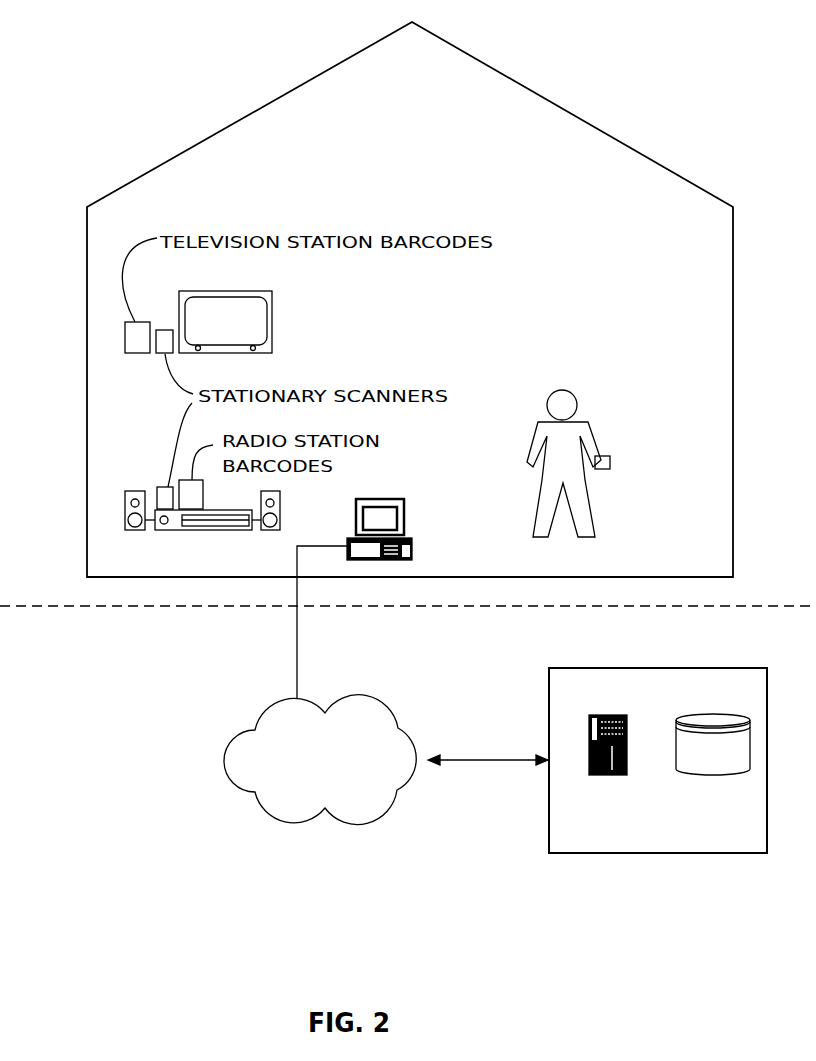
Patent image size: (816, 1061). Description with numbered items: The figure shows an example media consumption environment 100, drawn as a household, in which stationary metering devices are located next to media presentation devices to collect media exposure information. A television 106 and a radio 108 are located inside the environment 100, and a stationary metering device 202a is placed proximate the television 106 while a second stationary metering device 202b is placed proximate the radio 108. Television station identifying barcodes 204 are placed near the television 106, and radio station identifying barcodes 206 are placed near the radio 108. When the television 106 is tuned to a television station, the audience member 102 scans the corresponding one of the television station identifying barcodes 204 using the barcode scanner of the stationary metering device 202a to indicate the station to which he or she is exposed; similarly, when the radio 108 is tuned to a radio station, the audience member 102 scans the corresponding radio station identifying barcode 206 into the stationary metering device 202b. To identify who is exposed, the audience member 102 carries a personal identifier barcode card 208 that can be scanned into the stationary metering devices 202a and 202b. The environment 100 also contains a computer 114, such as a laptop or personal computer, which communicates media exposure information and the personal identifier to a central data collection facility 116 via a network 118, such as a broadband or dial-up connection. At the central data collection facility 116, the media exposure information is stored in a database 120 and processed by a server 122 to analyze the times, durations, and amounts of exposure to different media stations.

The media consumption environment 100 is at (612, 82).
The audience member 102 is at (588, 537).
The television 106 is at (225, 291).
The radio 108 is at (202, 532).
The computer 114 is at (383, 499).
The central data collection facility 116 is at (562, 668).
The network 118 is at (357, 698).
The database 120 is at (717, 715).
The server 122 is at (610, 715).
The stationary metering device 202a is at (158, 354).
The stationary metering device 202b is at (163, 487).
The television station identifying barcodes 204 is at (125, 338).
The radio station identifying barcodes 206 is at (183, 508).
The personal identifier barcode card 208 is at (612, 460).